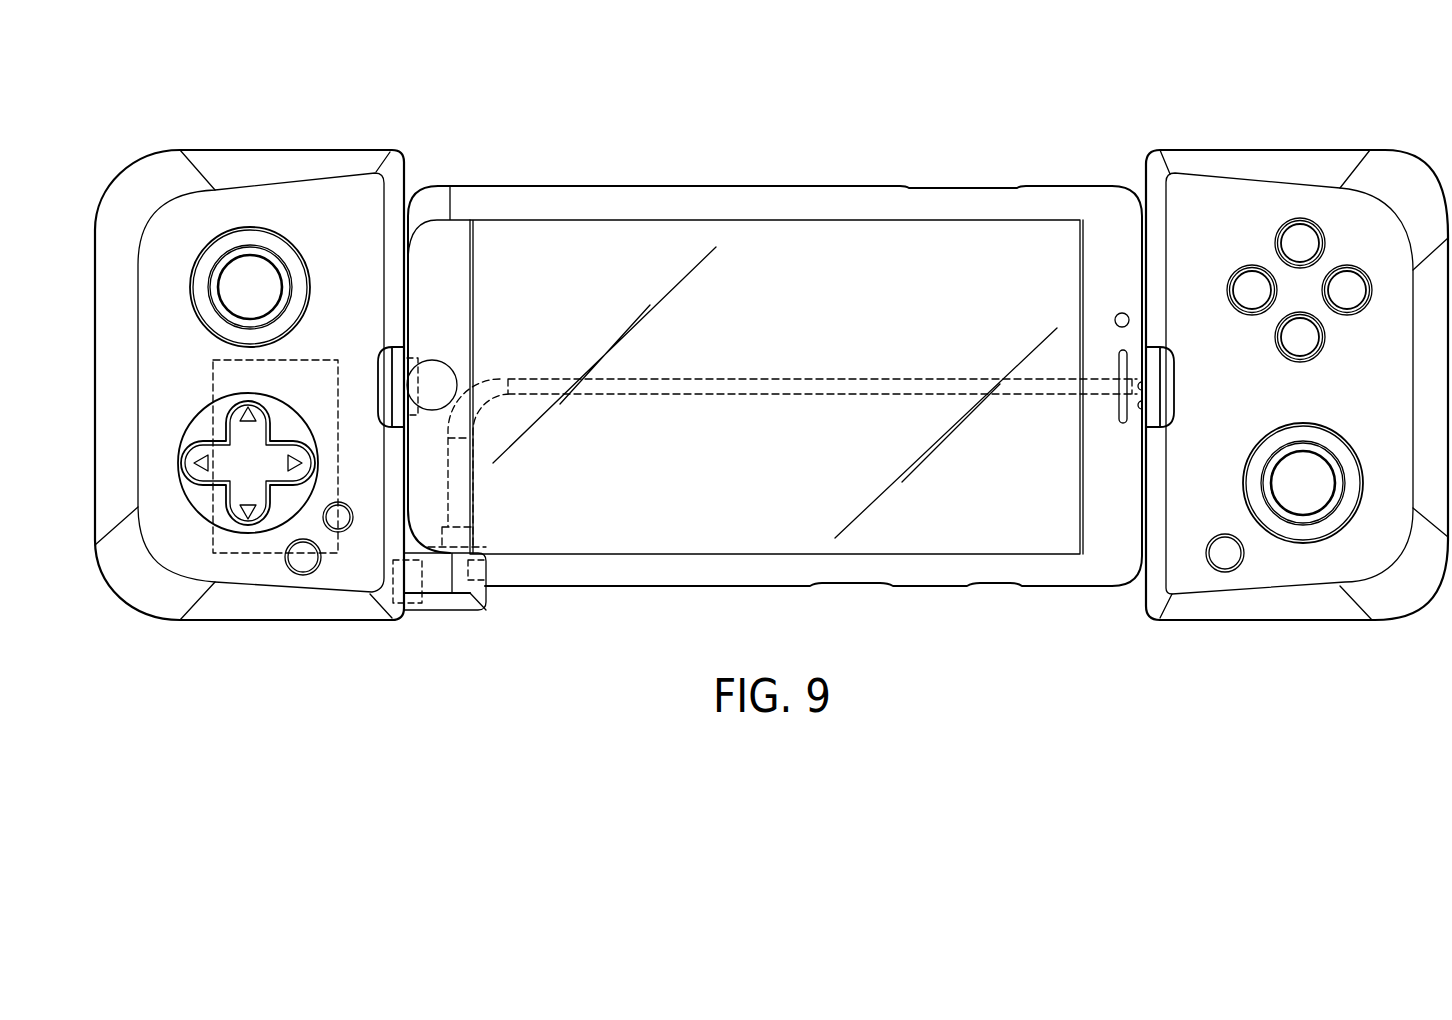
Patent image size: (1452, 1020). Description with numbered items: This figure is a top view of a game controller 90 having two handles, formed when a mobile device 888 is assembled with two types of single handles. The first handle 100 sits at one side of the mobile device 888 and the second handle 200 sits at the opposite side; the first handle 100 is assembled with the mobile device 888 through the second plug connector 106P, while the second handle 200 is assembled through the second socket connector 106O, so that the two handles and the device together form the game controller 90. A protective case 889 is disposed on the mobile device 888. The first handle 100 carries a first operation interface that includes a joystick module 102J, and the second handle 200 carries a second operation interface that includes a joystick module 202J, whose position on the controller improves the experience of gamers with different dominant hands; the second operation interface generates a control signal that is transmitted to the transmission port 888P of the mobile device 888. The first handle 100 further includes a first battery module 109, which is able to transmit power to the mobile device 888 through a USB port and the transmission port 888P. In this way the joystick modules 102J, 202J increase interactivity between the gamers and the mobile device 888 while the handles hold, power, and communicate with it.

The game controller 90 is at (1285, 138).
The first handle 100 is at (155, 160).
The joystick module 102J is at (262, 277).
The first battery module 109 is at (260, 547).
The second socket connector 106O is at (396, 592).
The second plug connector 106P is at (448, 600).
The mobile device 888 is at (630, 255).
The transmission port 888P is at (408, 382).
The protective case 889 is at (813, 203).
The second handle 200 is at (1397, 155).
The joystick module 202J is at (1300, 497).